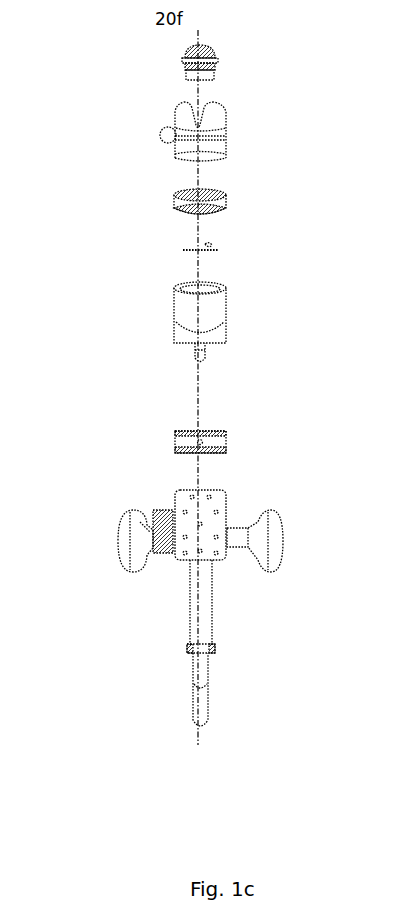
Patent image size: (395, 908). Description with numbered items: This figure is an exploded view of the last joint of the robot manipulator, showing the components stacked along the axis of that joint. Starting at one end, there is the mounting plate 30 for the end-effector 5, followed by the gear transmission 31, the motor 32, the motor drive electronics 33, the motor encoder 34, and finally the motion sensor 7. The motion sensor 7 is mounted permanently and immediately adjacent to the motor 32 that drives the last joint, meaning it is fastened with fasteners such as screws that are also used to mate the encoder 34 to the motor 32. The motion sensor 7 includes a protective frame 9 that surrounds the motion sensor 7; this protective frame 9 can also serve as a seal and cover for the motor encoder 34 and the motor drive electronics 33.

The motion sensor 7 is at (228, 47).
The protective frame 9 is at (167, 111).
The motor encoder 34 is at (236, 201).
The motor drive electronics 33 is at (226, 249).
The motor 32 is at (237, 317).
The gear transmission 31 is at (164, 437).
The mounting plate 30 is at (183, 457).
The end-effector 5 is at (233, 566).